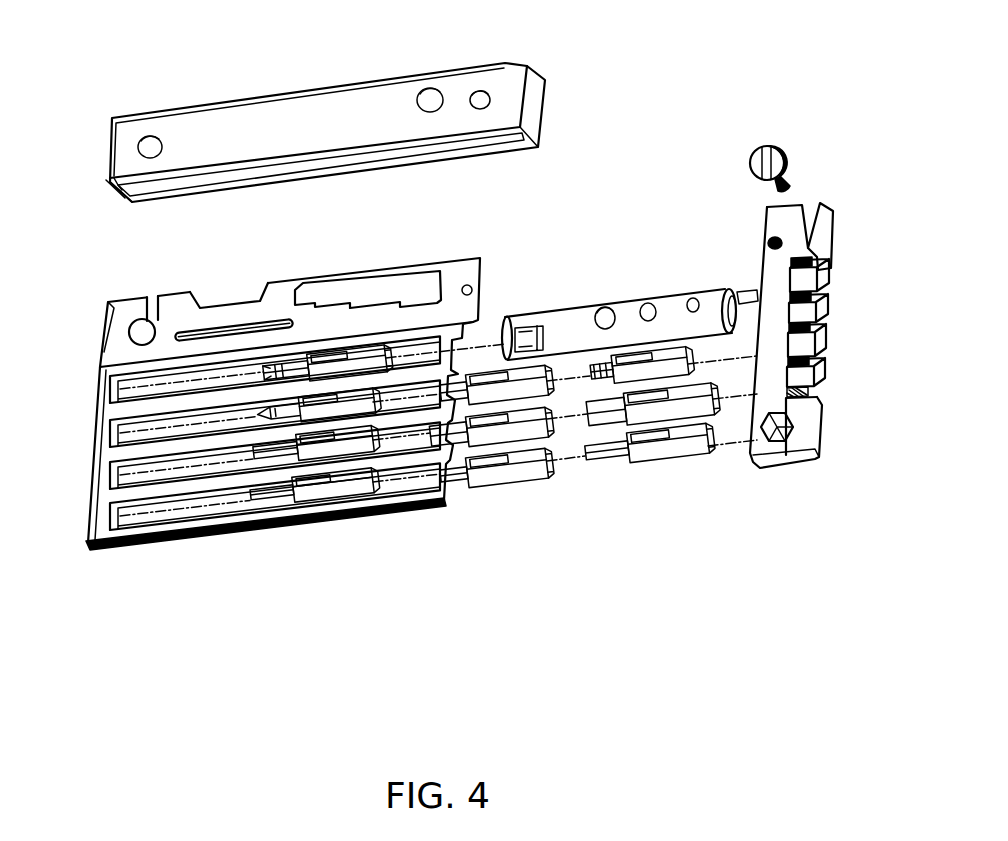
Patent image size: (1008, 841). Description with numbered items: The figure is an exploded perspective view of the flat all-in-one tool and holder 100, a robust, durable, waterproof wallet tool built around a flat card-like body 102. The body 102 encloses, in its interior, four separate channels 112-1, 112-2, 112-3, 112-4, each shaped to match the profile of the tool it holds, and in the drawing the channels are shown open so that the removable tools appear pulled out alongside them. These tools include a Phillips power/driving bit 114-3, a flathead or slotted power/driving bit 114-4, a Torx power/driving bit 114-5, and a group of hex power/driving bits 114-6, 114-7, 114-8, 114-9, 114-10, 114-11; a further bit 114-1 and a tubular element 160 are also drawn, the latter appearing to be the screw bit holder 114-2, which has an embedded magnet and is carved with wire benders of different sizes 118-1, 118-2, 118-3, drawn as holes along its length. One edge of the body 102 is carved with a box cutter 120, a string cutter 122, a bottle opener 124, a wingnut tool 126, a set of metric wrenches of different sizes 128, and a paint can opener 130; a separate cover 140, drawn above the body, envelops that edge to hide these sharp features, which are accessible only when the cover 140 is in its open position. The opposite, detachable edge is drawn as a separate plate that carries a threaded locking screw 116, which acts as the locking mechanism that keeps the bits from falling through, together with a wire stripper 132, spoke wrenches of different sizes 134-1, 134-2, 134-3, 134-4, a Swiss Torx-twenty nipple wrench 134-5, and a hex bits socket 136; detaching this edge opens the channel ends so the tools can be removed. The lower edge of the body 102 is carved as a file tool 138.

The flat all-in-one tool and holder 100 is at (158, 44).
The flat card-like body 102 is at (103, 373).
The channel 112-1 is at (235, 385).
The channel 112-2 is at (235, 428).
The channel 112-3 is at (240, 470).
The channel 112-4 is at (240, 505).
The T25 bit 114-1 is at (330, 352).
The screw bit holder 114-2 is at (540, 327).
The Phillips power/driving bit 114-3 is at (277, 510).
The flathead or slotted power/driving bit 114-4 is at (450, 500).
The Torx power/driving bit 114-5 is at (615, 453).
The hex power/driving bit 114-6 is at (313, 520).
The hex power/driving bit 114-7 is at (487, 500).
The hex power/driving bit 114-8 is at (643, 453).
The hex power/driving bit 114-9 is at (360, 520).
The hex power/driving bit 114-10 is at (537, 495).
The hex power/driving bit 114-11 is at (687, 457).
The threaded locking screw 116 is at (787, 140).
The wire bender 118-1 is at (605, 312).
The wire bender 118-2 is at (648, 305).
The wire bender 118-3 is at (693, 300).
The box cutter 120 is at (110, 303).
The string cutter 122 is at (143, 308).
The bottle opener 124 is at (200, 300).
The wingnut tool 126 is at (238, 330).
The metric wrench set 128 is at (362, 290).
The paint can opener 130 is at (466, 283).
The wire stripper 132 is at (808, 210).
The spoke wrench 134-1 is at (812, 266).
The spoke wrench 134-2 is at (812, 297).
The spoke wrench 134-3 is at (812, 328).
The spoke wrench 134-4 is at (812, 362).
The Swiss T-20 Torn nipple wrench 134-5 is at (812, 392).
The hex bits socket 136 is at (793, 423).
The file tool 138 is at (192, 542).
The cover 140 is at (470, 80).
The tube 160 is at (515, 320).